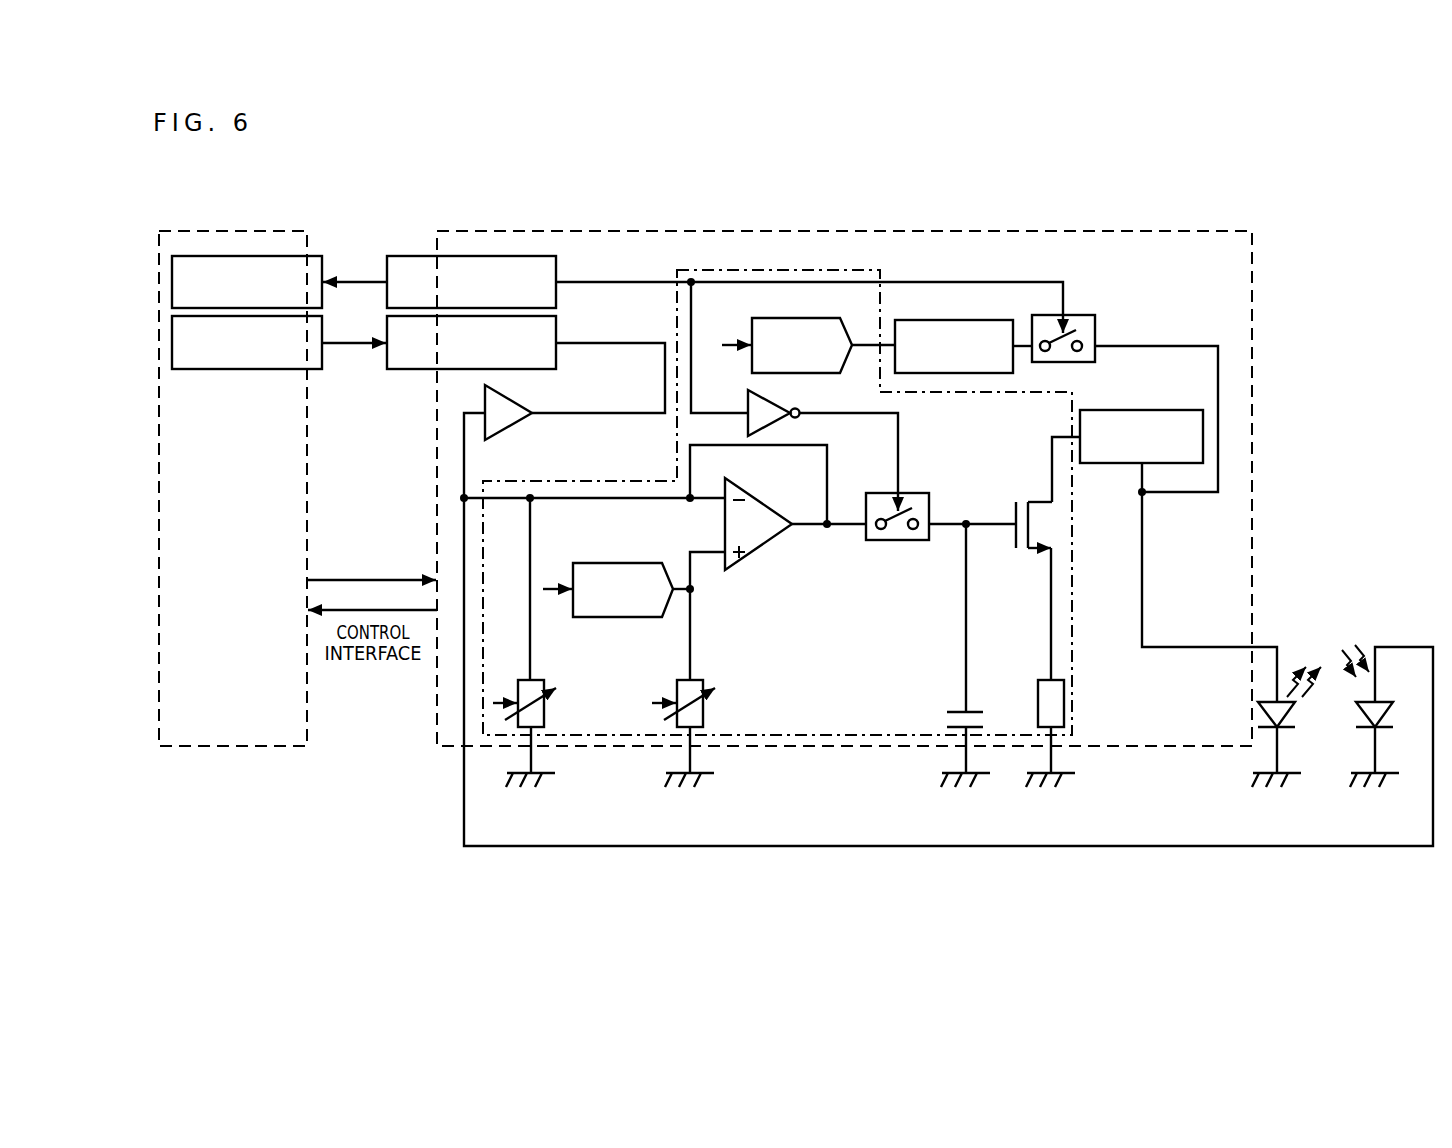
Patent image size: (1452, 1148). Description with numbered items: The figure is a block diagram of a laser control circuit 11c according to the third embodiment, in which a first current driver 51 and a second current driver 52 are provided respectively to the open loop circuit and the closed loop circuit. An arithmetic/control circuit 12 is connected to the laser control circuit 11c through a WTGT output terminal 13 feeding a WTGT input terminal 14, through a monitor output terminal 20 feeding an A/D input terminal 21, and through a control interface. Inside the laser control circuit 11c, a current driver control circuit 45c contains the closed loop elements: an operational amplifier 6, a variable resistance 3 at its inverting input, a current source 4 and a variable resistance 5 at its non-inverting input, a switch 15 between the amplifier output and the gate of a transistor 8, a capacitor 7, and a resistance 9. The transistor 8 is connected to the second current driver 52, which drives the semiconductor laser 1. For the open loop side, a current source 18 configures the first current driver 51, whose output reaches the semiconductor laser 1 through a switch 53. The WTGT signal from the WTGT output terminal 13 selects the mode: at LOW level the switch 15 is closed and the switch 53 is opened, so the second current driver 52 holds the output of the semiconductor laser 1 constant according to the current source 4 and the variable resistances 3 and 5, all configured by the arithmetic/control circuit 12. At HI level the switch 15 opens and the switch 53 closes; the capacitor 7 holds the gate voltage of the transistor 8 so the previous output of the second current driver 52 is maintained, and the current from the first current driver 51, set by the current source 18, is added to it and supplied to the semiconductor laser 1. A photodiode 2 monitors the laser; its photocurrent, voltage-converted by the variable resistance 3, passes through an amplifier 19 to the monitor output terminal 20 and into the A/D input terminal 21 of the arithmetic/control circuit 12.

The semiconductor laser 1 is at (1283, 715).
The photodiode 2 is at (1362, 715).
The variable resistance 3 is at (537, 678).
The current source 4 is at (618, 562).
The variable resistance 5 is at (697, 678).
The operational amplifier 6 is at (763, 500).
The capacitor 7 is at (957, 708).
The transistor 8 is at (1015, 512).
The resistance 9 is at (1065, 710).
The laser control circuit 11c is at (890, 230).
The arithmetic/control circuit 12 is at (253, 230).
The WTGT output terminal 13 is at (283, 255).
The WTGT input terminal 14 is at (420, 255).
The switch 15 is at (910, 493).
The current source 18 is at (797, 318).
The amplifier 19 is at (510, 431).
The monitor output terminal 20 is at (425, 370).
The A/D input terminal 21 is at (288, 370).
The current driver control circuit 45c is at (732, 269).
The first current driver 51 is at (937, 320).
The second current driver 52 is at (1142, 410).
The switch 53 is at (1078, 313).